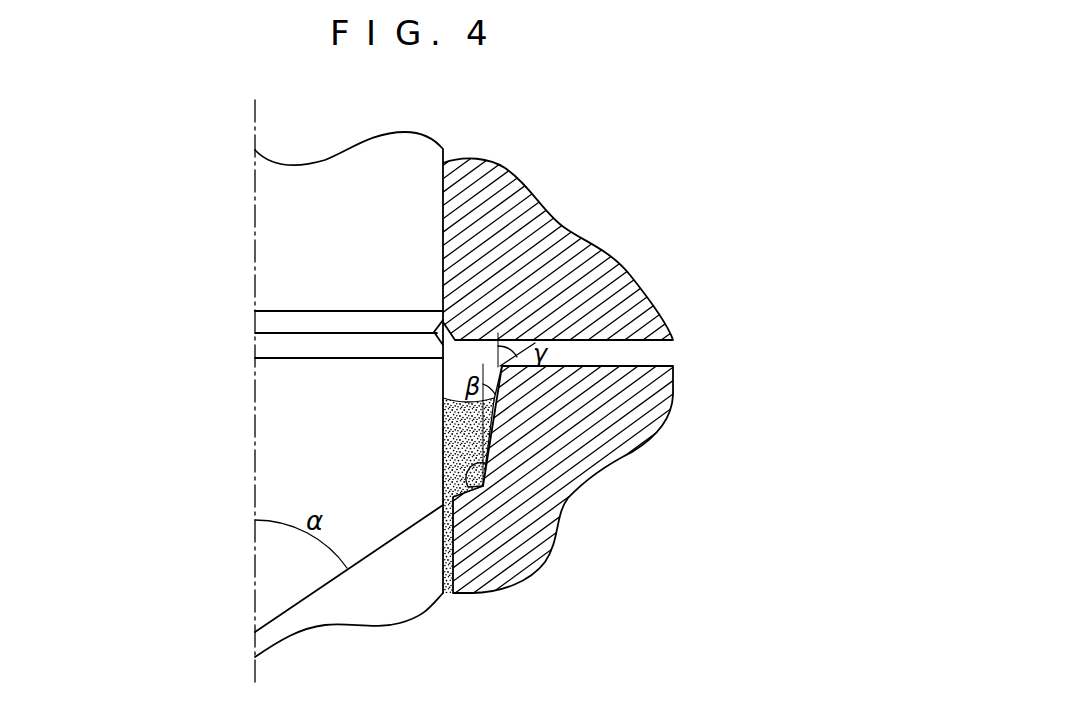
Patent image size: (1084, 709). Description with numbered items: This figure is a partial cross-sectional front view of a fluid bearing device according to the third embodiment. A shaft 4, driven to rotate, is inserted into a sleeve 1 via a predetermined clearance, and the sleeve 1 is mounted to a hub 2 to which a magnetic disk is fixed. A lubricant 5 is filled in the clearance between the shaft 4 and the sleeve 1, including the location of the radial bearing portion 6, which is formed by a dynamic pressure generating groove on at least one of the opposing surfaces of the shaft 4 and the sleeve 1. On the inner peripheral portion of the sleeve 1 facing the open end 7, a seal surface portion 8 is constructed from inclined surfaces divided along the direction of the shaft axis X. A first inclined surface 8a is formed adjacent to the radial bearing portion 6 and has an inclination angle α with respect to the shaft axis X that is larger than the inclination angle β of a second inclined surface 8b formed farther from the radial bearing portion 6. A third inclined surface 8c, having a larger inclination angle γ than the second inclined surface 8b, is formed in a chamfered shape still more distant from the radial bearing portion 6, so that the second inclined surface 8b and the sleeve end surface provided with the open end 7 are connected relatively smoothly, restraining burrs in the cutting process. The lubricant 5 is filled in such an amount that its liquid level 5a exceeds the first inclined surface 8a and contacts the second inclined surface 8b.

The sleeve 1 is at (520, 535).
The hub 2 is at (542, 245).
The shaft 4 is at (368, 174).
The lubricant 5 is at (443, 407).
The liquid level 5a is at (452, 397).
The radial bearing portion 6 is at (442, 562).
The open end 7 is at (462, 366).
The seal surface portion 8 is at (724, 474).
The first inclined surface 8a is at (483, 460).
The second inclined surface 8b is at (490, 410).
The third inclined surface 8c is at (503, 365).
The shaft axis X is at (250, 228).